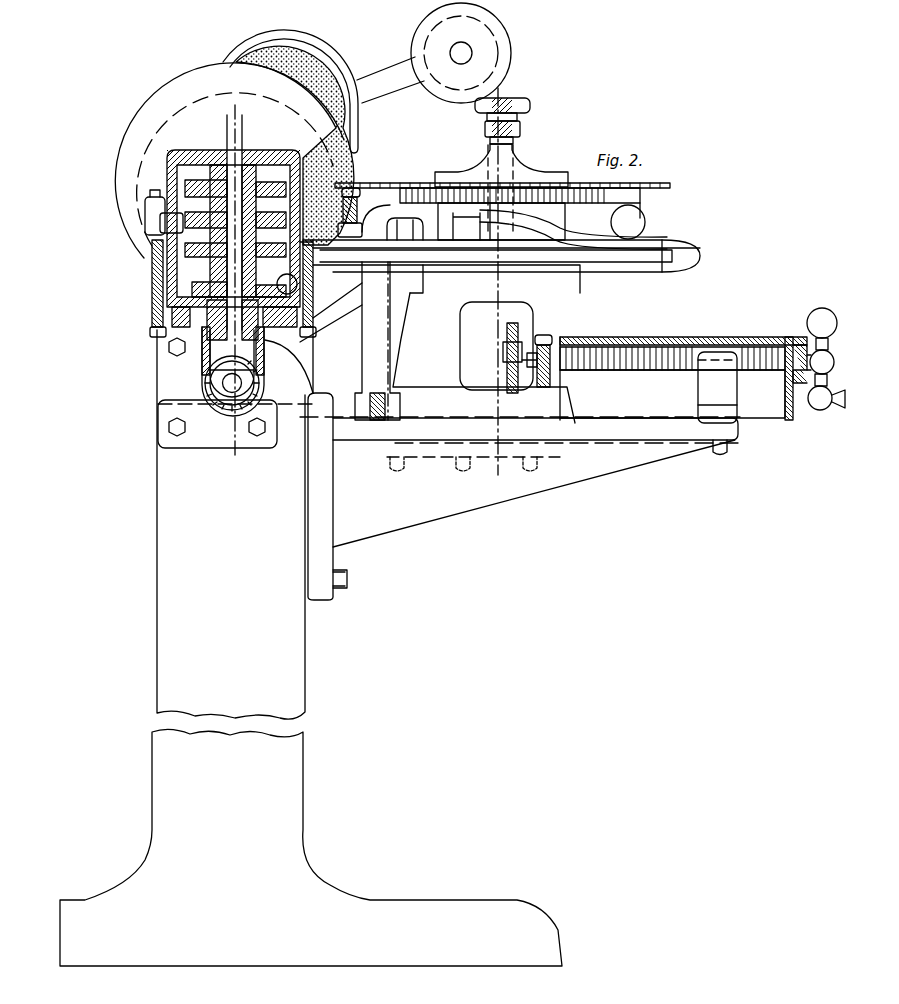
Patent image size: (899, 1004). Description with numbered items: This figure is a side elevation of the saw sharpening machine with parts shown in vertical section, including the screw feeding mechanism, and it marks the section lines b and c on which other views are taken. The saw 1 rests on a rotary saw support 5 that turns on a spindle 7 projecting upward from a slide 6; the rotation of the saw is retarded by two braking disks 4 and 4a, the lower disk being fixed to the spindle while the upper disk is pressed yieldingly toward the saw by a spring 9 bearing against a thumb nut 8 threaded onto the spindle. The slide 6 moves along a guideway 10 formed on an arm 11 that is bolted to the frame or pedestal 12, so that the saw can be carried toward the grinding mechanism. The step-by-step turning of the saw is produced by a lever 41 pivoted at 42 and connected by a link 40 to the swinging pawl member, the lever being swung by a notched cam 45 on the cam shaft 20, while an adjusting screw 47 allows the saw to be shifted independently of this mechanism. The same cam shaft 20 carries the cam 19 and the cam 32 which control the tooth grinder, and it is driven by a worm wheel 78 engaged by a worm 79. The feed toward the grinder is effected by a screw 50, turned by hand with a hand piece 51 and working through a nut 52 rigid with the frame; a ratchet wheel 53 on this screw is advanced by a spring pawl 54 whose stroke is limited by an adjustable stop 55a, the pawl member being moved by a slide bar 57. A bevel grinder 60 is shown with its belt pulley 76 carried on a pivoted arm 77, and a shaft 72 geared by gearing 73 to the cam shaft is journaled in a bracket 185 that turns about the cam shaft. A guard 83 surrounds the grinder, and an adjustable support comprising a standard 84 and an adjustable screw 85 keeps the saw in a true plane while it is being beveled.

The saw 1 is at (660, 184).
The braking disk 4 is at (447, 207).
The braking disk 4a is at (530, 165).
The saw support 5 is at (418, 188).
The slide 6 is at (786, 427).
The spindle 7 is at (525, 300).
The thumb nut 8 is at (530, 110).
The spring 9 is at (522, 137).
The guideway 10 is at (627, 422).
The arm 11 is at (438, 490).
The frame or pedestal 12 is at (311, 648).
The cam 19 is at (206, 231).
The cam shaft 20 is at (225, 343).
The cam 32 is at (206, 231).
The link 40 is at (565, 230).
The lever 41 is at (566, 262).
The pivot 42 is at (402, 228).
The cam 45 is at (203, 270).
The screw 47 is at (634, 224).
The screw 50 is at (647, 347).
The hand piece 51 is at (818, 408).
The nut 52 is at (722, 390).
The ratchet wheel 53 is at (522, 330).
The pawl 54 is at (513, 344).
The adjustable stop 55a is at (553, 390).
The slide bar 57 is at (513, 310).
The bevel grinder 60 is at (300, 77).
The shaft 72 is at (228, 396).
The gearing 73 is at (243, 382).
The pulley 76 is at (442, 95).
The arm 77 is at (393, 74).
The worm wheel 78 is at (284, 281).
The worm 79 is at (318, 308).
The guard 83 is at (308, 45).
The standard 84 is at (373, 343).
The adjustable screw 85 is at (400, 185).
The bracket 185 is at (207, 327).
The section line b— b is at (235, 150).
The section line c— c is at (500, 286).